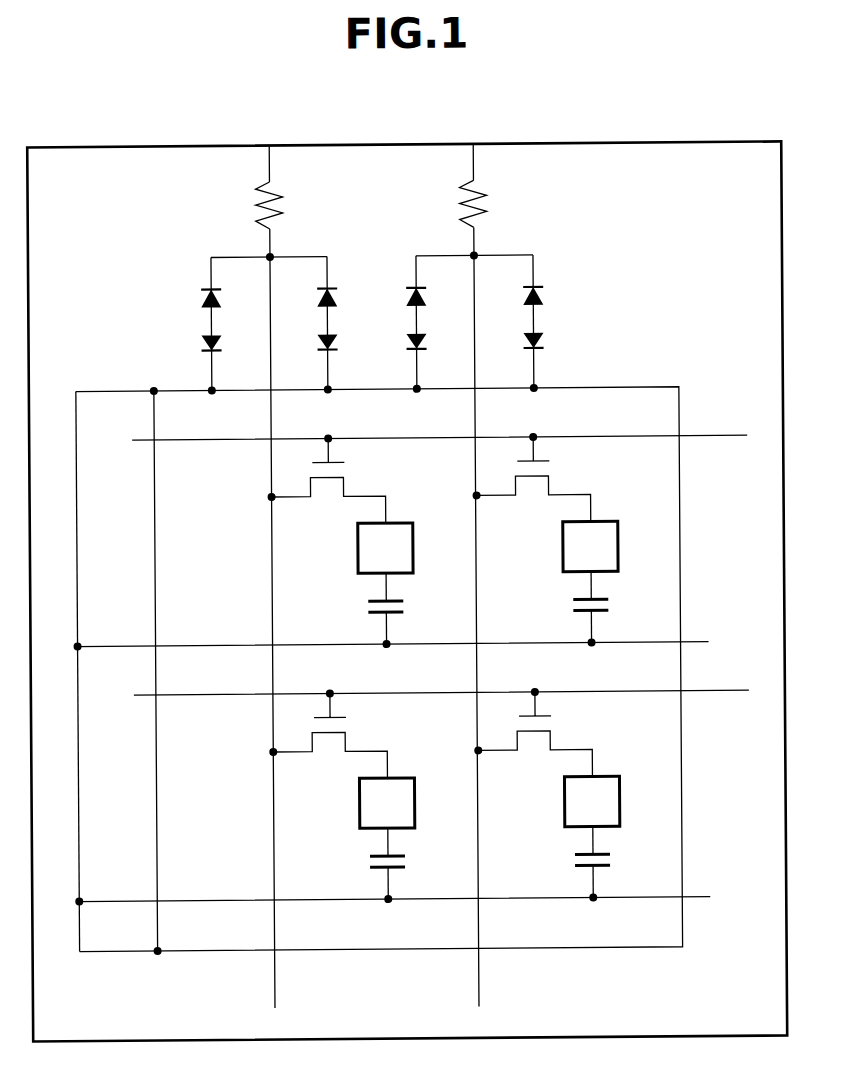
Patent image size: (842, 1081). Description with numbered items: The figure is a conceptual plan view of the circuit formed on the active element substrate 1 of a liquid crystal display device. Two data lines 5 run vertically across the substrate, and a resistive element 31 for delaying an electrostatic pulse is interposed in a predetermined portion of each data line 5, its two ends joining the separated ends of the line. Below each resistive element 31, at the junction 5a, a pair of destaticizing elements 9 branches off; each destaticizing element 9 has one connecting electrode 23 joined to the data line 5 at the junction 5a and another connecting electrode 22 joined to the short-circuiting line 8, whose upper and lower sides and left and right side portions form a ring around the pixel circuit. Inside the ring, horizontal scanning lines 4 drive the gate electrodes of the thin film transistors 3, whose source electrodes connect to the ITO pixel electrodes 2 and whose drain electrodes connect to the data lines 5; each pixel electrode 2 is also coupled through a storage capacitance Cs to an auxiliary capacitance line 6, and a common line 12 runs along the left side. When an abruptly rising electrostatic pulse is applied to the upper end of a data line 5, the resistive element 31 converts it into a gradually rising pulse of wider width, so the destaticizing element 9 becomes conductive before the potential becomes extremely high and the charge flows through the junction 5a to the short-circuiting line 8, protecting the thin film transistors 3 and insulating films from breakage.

The active element substrate 1 is at (627, 138).
The pixel electrode 2 is at (414, 547).
The thin film transistor 3 is at (325, 504).
The scanning line 4 is at (745, 440).
The data line 5 is at (274, 166).
The junction portion of data line 5a is at (275, 255).
The auxiliary capacitance line 6 is at (115, 644).
The short-circuiting line 8 is at (625, 391).
The destaticizing element 9 is at (199, 319).
The common line 12 is at (78, 522).
The connecting electrode 22 is at (211, 368).
The connecting electrode 23 is at (211, 275).
The resistive element 31 is at (292, 206).
The storage capacitor Cs is at (508, 748).